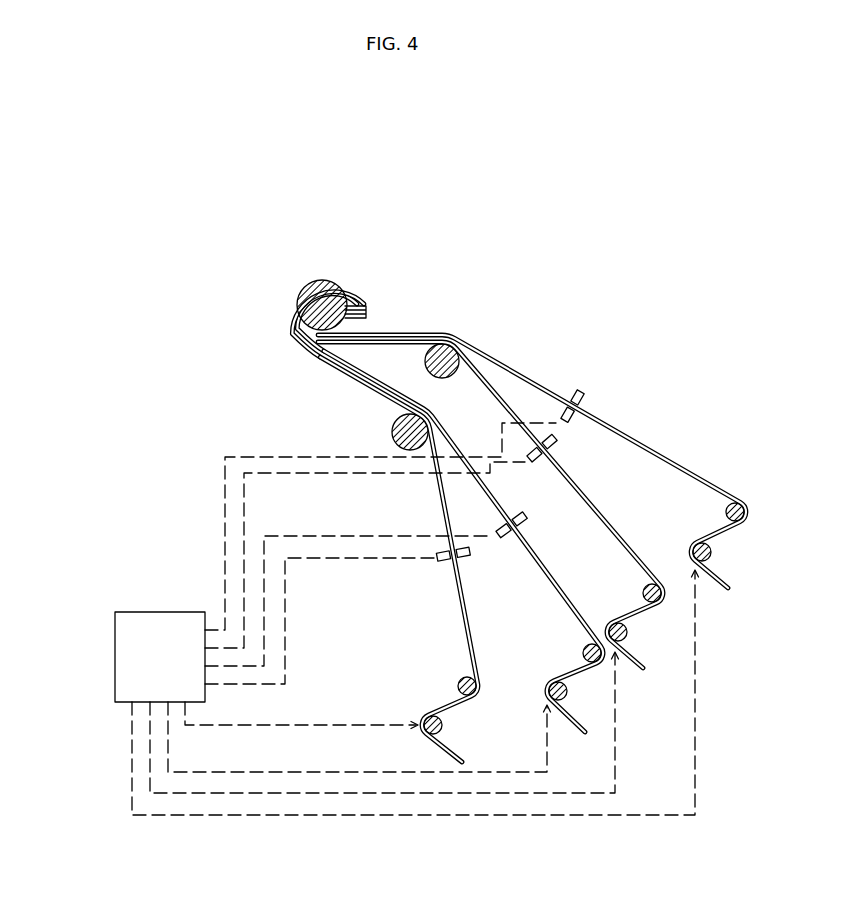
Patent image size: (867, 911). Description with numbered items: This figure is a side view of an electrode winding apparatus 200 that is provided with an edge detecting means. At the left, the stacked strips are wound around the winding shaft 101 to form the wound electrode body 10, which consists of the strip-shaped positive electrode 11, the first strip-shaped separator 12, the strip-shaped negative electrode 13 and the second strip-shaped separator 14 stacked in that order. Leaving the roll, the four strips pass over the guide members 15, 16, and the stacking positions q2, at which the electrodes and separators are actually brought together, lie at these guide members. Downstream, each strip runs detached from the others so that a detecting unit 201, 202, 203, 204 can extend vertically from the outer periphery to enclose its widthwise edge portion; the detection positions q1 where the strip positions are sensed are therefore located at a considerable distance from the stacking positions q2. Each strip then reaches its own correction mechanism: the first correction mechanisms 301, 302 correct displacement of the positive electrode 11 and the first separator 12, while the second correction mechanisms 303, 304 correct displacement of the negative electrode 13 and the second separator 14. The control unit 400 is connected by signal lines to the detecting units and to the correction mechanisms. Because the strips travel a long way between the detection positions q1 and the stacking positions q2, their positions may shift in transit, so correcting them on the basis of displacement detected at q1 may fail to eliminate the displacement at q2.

The wound electrode body 10 is at (279, 273).
The winding shaft 101 is at (298, 308).
The electrode winding apparatus 200 is at (366, 242).
The guide member 15 is at (458, 343).
The guide member 16 is at (396, 426).
The strip-shaped positive electrode 11 is at (676, 463).
The first strip-shaped separator 12 is at (618, 534).
The strip-shaped negative electrode 13 is at (574, 606).
The second strip-shaped separator 14 is at (473, 648).
The detection position q1 is at (606, 407).
The stacking position q2 is at (453, 337).
The detecting unit 201 is at (583, 392).
The detecting unit 202 is at (560, 440).
The detecting unit 203 is at (530, 518).
The detecting unit 204 is at (468, 560).
The first correction mechanism 301 is at (745, 497).
The first correction mechanism 302 is at (664, 600).
The second correction mechanism 303 is at (581, 695).
The second correction mechanism 304 is at (482, 694).
The control unit 400 is at (115, 650).